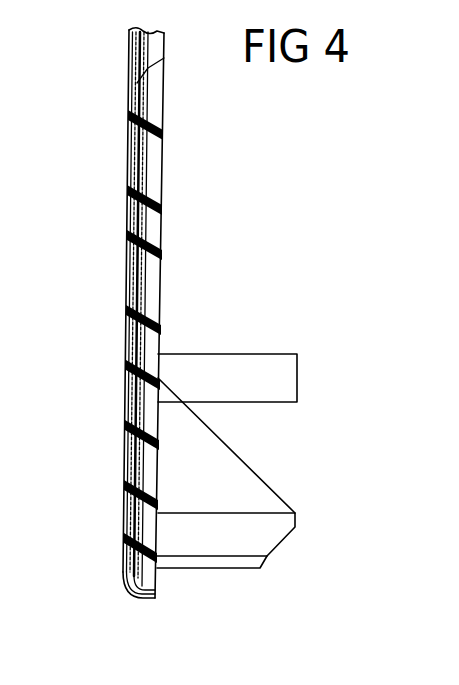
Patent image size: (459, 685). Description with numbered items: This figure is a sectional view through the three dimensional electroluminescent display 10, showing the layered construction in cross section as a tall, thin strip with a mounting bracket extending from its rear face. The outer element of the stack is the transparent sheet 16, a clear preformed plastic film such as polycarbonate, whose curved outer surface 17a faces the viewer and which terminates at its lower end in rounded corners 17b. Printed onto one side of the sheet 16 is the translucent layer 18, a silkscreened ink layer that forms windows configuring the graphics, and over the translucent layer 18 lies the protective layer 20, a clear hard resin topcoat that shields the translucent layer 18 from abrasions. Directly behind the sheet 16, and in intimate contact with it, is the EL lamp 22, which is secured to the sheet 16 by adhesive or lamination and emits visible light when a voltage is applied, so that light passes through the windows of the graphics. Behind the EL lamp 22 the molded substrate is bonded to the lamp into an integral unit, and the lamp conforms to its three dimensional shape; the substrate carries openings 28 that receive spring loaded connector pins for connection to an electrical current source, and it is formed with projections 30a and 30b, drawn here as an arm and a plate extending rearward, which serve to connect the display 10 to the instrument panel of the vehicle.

The three dimensional electroluminescent display 10 is at (279, 131).
The sheet 16 is at (147, 275).
The curved outer surface 17a is at (128, 206).
The rounded corners 17b is at (147, 598).
The translucent layer 18 is at (137, 311).
The protective layer 20 is at (135, 277).
The EL lamp 22 is at (152, 205).
The openings 28 is at (155, 158).
The projection 30a is at (262, 497).
The projection 30b is at (283, 378).